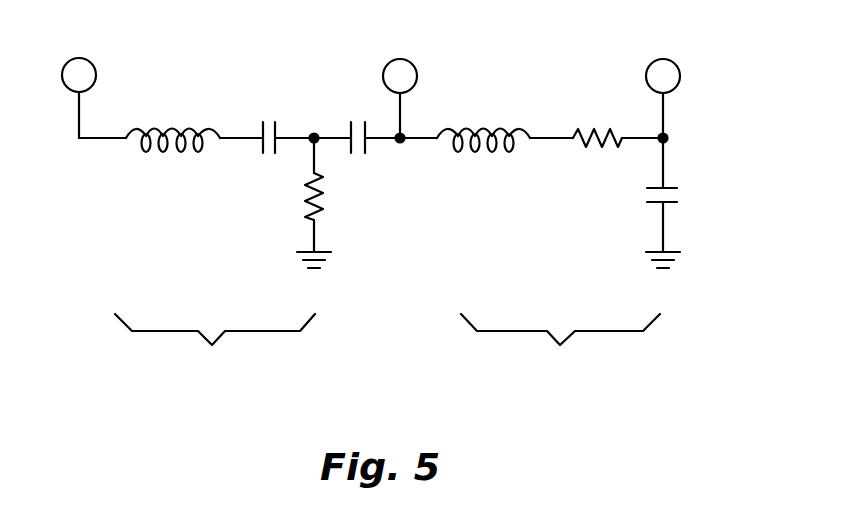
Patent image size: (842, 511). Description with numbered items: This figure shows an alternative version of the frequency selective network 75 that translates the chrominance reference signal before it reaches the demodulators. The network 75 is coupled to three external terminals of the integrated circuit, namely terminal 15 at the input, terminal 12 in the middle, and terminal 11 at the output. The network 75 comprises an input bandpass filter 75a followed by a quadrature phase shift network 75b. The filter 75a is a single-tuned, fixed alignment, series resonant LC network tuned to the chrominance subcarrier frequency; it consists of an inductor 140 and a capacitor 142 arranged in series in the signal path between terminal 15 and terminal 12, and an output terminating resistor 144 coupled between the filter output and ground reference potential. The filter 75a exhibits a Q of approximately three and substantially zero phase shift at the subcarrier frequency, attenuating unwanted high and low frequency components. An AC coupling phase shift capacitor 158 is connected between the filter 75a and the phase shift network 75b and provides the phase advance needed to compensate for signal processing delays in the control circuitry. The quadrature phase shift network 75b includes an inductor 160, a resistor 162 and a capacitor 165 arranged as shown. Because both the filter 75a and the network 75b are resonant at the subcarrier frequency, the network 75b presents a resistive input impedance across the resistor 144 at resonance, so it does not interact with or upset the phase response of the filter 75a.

The frequency selective network 75 is at (389, 376).
The input bandpass filter 75a is at (276, 234).
The quadrature phase shift network 75b is at (580, 234).
The external terminal 15 is at (94, 98).
The external terminal 12 is at (400, 101).
The external terminal 11 is at (663, 101).
The inductor 140 is at (155, 128).
The capacitor 142 is at (279, 103).
The output terminating resistor 144 is at (305, 209).
The AC coupling phase shift capacitor 158 is at (365, 121).
The inductor 160 is at (471, 128).
The resistor 162 is at (585, 128).
The capacitor 165 is at (677, 203).